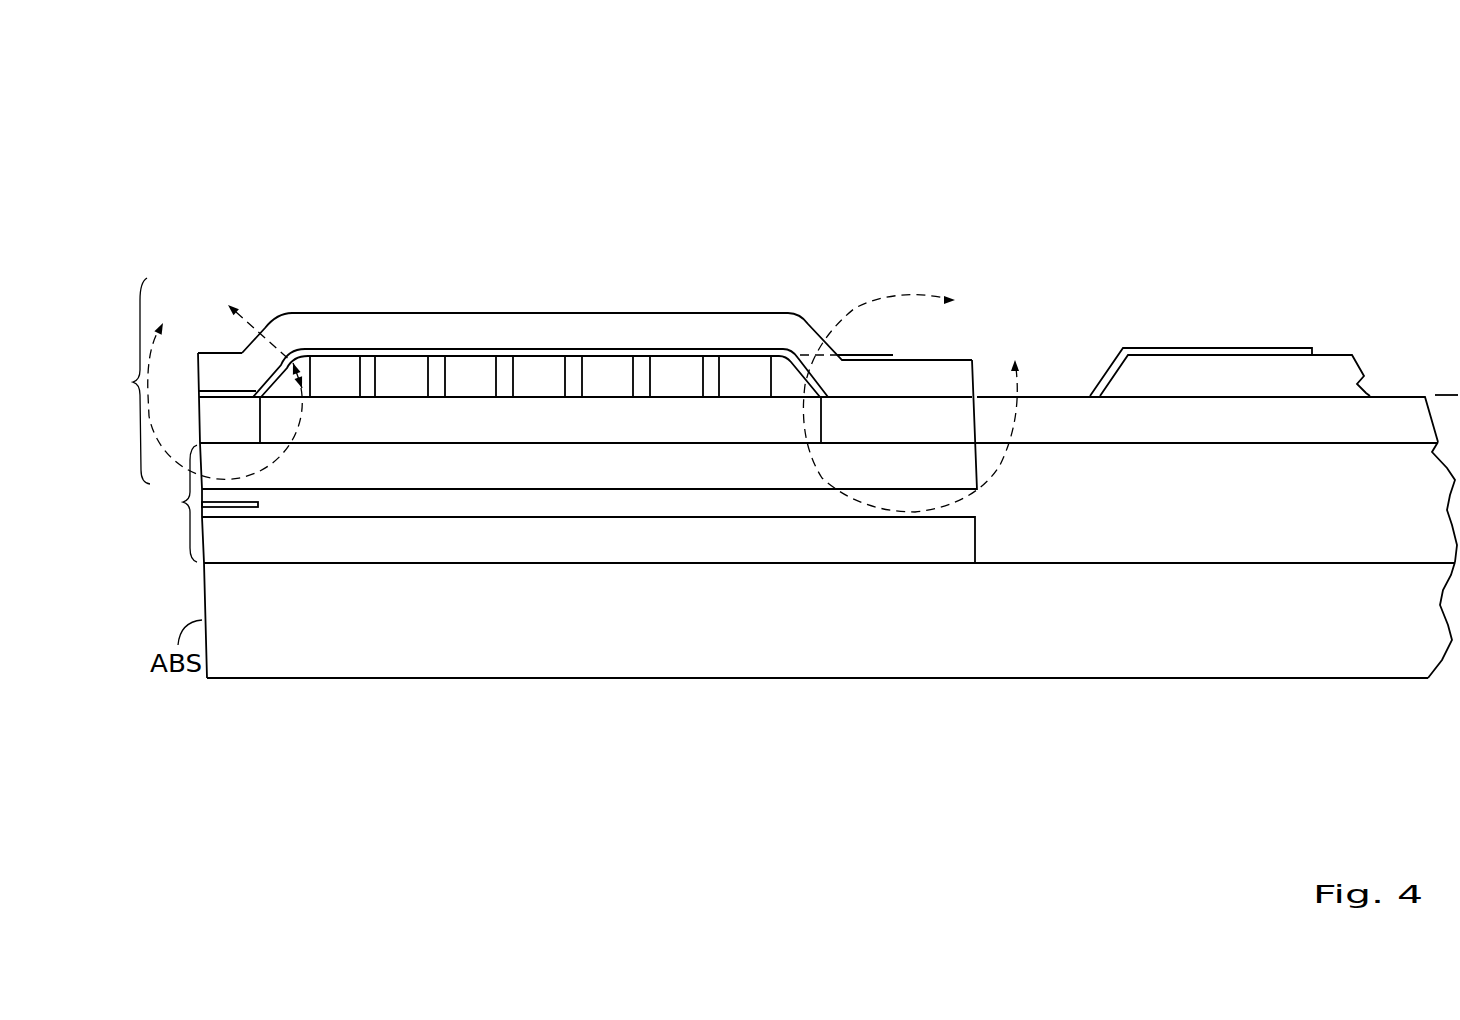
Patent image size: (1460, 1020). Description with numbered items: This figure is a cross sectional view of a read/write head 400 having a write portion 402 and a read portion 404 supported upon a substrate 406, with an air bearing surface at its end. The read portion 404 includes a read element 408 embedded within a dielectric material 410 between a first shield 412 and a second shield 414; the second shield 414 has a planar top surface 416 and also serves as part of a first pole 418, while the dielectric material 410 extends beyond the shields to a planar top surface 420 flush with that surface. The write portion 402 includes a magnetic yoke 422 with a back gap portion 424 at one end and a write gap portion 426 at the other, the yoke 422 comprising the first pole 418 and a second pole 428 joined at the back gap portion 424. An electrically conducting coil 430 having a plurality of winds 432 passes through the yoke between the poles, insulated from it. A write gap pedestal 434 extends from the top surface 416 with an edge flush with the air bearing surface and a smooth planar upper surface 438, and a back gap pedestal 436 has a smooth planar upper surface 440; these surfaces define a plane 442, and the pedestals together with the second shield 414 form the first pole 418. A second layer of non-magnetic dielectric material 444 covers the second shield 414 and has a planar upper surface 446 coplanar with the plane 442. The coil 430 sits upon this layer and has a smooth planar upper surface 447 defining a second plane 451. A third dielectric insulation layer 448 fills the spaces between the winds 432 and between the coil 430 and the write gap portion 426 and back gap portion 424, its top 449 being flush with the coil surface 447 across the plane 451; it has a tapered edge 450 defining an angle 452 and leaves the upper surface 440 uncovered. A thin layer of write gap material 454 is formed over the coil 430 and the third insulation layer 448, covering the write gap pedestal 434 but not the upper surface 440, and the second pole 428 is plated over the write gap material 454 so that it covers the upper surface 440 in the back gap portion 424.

The read/write head 400 is at (1044, 148).
The write portion 402 is at (148, 300).
The read portion 404 is at (178, 505).
The substrate 406 is at (302, 670).
The read element 408 is at (262, 506).
The dielectric material 410 is at (497, 517).
The first shield 412 is at (690, 558).
The second shield 414 is at (673, 483).
The planar top surface 416 is at (578, 443).
The first pole 418 is at (770, 502).
The planar top surface 420 is at (1030, 443).
The magnetic yoke 422 is at (642, 300).
The back gap portion 424 is at (911, 403).
The write gap portion 426 is at (225, 389).
The second pole 428 is at (476, 312).
The electrically conducting coil 430 is at (402, 345).
The winds 432 is at (463, 368).
The write gap pedestal 434 is at (250, 435).
The back gap pedestal 436 is at (908, 435).
The upper surface of write gap pedestal 438 is at (253, 393).
The upper surface of back gap pedestal 440 is at (858, 397).
The plane 442 is at (1452, 394).
The second layer of non-magnetic dielectric material 444 is at (455, 435).
The upper surface of second dielectric layer 446 is at (597, 396).
The upper surface of coil 447 is at (337, 357).
The third dielectric insulation layer 448 is at (707, 373).
The top of third insulation layer 449 is at (642, 355).
The tapered edge 450 is at (285, 375).
The second plane 451 is at (865, 355).
The angle 452 is at (301, 386).
The write gap material 454 is at (585, 352).